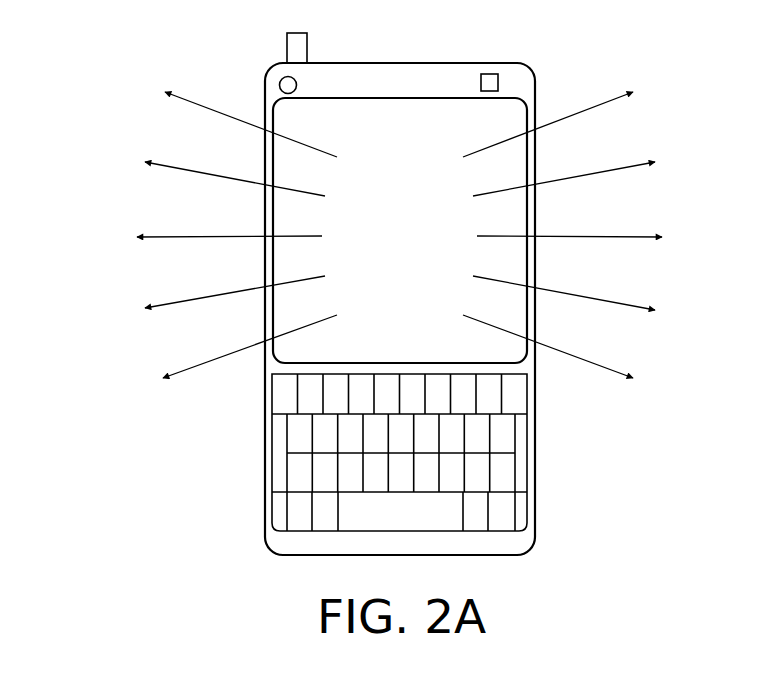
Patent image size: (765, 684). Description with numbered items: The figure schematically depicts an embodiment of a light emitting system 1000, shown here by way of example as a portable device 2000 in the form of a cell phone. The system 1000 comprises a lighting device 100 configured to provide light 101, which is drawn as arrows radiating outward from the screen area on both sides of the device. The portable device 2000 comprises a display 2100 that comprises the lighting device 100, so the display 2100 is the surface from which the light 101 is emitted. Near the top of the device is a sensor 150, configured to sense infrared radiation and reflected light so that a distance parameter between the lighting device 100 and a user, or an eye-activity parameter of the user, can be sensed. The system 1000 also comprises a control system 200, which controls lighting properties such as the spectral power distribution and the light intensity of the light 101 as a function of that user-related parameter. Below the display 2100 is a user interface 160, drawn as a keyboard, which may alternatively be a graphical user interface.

The light emitting system 1000 is at (580, 58).
The lighting device 100 is at (510, 168).
The light 101 is at (163, 378).
The sensor 150 is at (492, 78).
The user interface 160 is at (497, 474).
The control system 200 is at (558, 323).
The portable device 2000 is at (172, 205).
The display 2100 is at (290, 147).